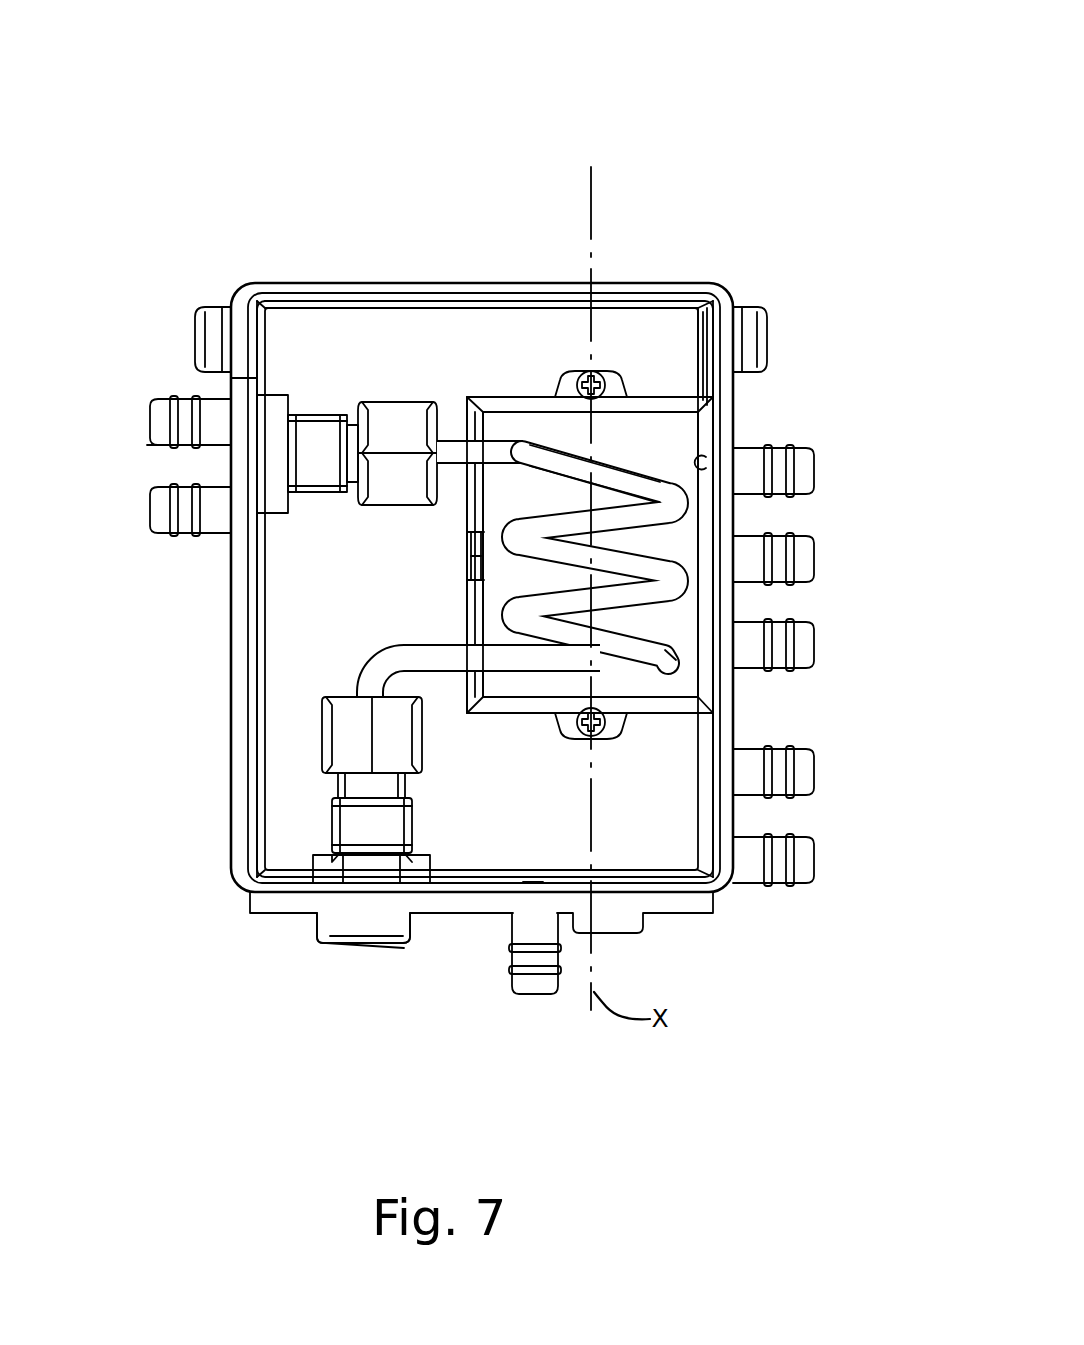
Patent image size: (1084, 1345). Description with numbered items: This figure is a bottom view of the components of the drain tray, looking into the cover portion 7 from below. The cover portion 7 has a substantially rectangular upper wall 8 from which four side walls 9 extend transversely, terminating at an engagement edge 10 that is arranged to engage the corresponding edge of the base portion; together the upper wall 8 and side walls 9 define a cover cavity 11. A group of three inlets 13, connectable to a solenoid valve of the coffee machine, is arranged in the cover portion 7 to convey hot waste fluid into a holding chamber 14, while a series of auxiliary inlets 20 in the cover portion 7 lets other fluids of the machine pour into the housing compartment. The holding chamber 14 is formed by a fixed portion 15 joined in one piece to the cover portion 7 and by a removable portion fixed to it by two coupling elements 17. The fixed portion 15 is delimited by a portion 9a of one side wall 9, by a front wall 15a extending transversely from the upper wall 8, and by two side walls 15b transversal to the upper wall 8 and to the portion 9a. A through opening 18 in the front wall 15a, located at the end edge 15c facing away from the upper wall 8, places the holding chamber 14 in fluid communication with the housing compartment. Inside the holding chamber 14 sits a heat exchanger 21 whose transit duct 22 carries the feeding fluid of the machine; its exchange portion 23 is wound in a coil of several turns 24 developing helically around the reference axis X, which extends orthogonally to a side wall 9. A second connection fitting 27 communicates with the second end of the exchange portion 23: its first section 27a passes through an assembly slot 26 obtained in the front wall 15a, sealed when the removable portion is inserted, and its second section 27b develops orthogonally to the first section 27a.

The cover portion 7 is at (733, 288).
The upper wall 8 is at (508, 318).
The side wall 9 is at (709, 323).
The portion of side wall 9a is at (700, 464).
The engagement edge 10 is at (252, 792).
The cover cavity 11 is at (347, 346).
The inlet 13 is at (816, 645).
The holding chamber 14 is at (675, 426).
The fixed portion 15 is at (652, 400).
The front wall 15a is at (483, 568).
The side walls 15b is at (550, 418).
The end edge 15c is at (483, 507).
The coupling element 17 is at (618, 372).
The through opening 18 is at (477, 558).
The auxiliary inlets 20 is at (816, 860).
The heat exchanger 21 is at (684, 676).
The transit duct 22 is at (446, 437).
The exchange portion 23 is at (685, 377).
The turns 24 is at (617, 467).
The assembly/disassembly slot 26 is at (457, 453).
The second connection fitting 27 is at (433, 658).
The first section 27a is at (478, 853).
The second section 27b is at (372, 945).